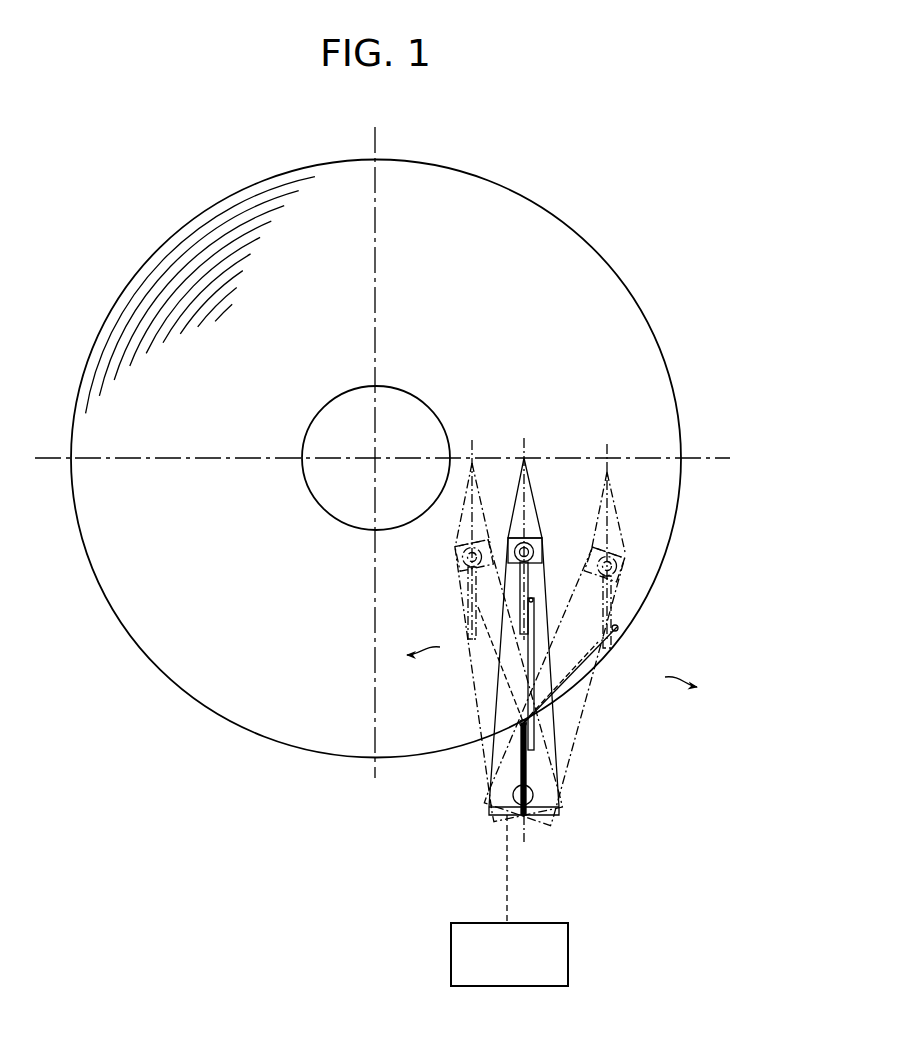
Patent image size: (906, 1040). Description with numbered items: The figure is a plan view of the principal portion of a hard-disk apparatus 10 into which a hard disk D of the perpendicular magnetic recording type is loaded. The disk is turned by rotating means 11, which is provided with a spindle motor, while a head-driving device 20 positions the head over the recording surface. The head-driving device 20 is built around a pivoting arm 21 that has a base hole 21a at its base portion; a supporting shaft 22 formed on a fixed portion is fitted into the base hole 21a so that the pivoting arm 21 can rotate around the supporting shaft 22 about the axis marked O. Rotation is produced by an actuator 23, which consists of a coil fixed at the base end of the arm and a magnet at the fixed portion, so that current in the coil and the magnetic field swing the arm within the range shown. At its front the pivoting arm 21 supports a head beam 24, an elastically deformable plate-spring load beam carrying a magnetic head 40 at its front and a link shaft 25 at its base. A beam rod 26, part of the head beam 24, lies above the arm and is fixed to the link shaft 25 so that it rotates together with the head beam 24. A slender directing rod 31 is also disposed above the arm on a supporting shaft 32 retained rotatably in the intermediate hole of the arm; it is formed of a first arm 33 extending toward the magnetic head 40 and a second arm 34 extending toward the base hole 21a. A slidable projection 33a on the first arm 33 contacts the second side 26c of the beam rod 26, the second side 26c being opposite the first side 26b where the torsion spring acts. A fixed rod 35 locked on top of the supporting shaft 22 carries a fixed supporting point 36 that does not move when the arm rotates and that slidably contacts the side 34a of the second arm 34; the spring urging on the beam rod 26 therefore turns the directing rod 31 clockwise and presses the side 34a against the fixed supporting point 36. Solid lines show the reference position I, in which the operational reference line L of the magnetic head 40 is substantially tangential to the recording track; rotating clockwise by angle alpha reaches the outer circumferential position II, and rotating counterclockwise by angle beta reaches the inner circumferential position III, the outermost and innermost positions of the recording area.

The hard-disk apparatus 10 is at (658, 275).
The rotating means 11 is at (337, 418).
The head-driving device 20 is at (561, 644).
The pivoting arm 21 is at (557, 747).
The base hole 21a is at (534, 795).
The supporting shaft 22 is at (498, 817).
The actuator 23 is at (568, 947).
The head beam 24 is at (533, 497).
The link shaft 25 is at (533, 562).
The beam rod 26 is at (504, 580).
The first side 26b is at (495, 605).
The second side 26c is at (530, 573).
The directing rod 31 is at (536, 714).
The supporting shaft 32 is at (515, 663).
The first arm 33 is at (556, 686).
The slidable projection 33a is at (537, 598).
The second arm 34 is at (528, 723).
The side 34a is at (518, 700).
The fixed rod 35 is at (511, 755).
The fixed supporting point 36 is at (511, 740).
The magnetic head 40 is at (527, 457).
The hard disk D is at (555, 250).
The operational reference line L is at (540, 528).
The rotation axis O is at (523, 856).
The reference position I is at (553, 618).
The outer circumferential position II is at (634, 565).
The inner circumferential position III is at (454, 572).